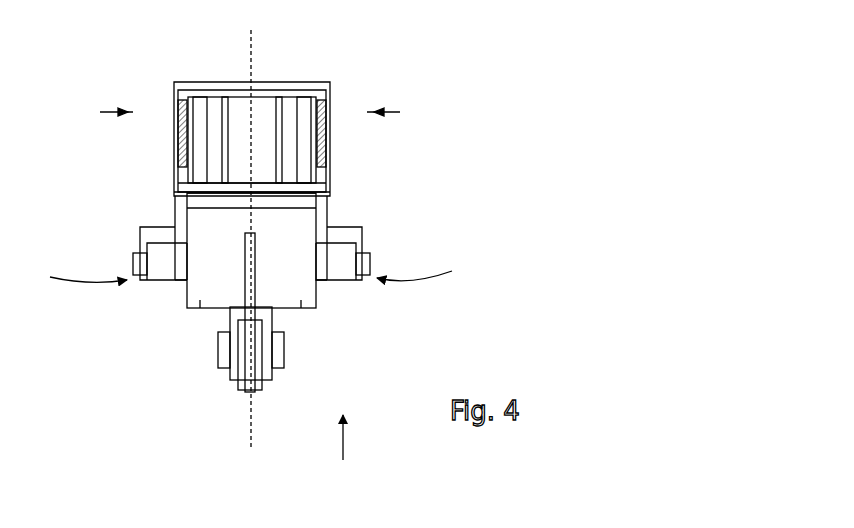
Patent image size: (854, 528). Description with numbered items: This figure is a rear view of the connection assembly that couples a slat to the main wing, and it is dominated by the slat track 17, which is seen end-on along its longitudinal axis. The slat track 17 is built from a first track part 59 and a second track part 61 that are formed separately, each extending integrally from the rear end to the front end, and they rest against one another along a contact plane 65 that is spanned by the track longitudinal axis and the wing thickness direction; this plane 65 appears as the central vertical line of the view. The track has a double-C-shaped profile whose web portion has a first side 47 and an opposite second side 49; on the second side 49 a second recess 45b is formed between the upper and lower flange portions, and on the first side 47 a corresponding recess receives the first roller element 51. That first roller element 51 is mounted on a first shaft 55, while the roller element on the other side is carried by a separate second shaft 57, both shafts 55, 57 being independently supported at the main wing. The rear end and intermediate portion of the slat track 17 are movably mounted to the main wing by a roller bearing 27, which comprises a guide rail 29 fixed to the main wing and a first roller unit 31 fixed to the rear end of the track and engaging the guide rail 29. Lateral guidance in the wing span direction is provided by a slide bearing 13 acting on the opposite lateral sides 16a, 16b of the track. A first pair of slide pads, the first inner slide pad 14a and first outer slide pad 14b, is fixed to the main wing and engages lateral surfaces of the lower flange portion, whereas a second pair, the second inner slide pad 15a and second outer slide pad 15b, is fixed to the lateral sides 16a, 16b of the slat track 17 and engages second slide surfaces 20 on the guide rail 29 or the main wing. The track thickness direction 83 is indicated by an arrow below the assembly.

The slide bearing 13 is at (250, 269).
The first inner slide pad 14a is at (153, 282).
The first outer slide pad 14b is at (345, 280).
The second inner slide pad 15a is at (179, 92).
The second outer slide pad 15b is at (321, 92).
The lateral side 16a is at (107, 112).
The lateral side 16b is at (393, 112).
The slat track 17 is at (201, 297).
The second slide surfaces 20 is at (182, 130).
The roller bearing 27 is at (320, 290).
The guide rail 29 is at (330, 147).
The first roller unit 31 is at (264, 98).
The second recess 45b is at (324, 247).
The first side 47 is at (170, 201).
The second side 49 is at (338, 211).
The first roller element 51 is at (181, 284).
The first shaft 55 is at (133, 262).
The second shaft 57 is at (371, 261).
The first track part 59 is at (218, 284).
The second track part 61 is at (302, 312).
The contact plane 65 is at (253, 430).
The track thickness direction 83 is at (345, 447).